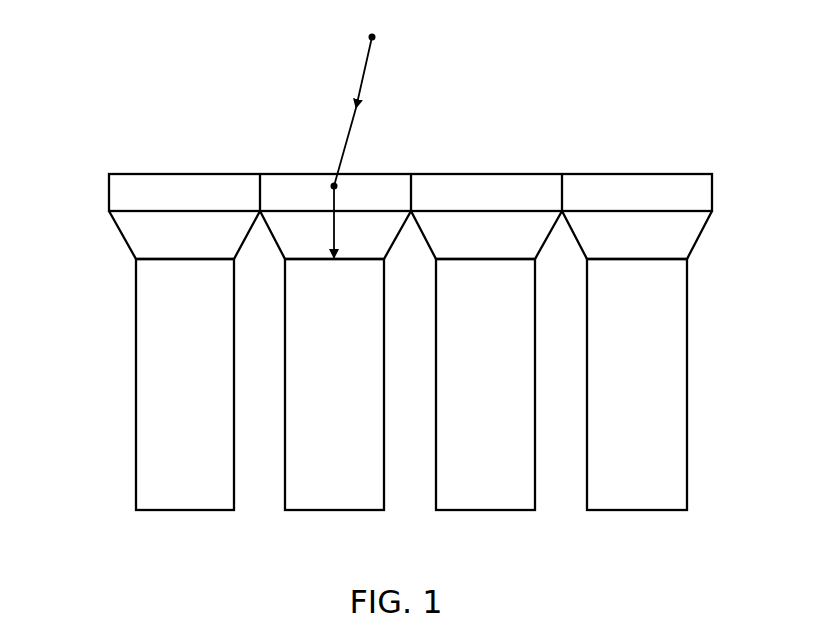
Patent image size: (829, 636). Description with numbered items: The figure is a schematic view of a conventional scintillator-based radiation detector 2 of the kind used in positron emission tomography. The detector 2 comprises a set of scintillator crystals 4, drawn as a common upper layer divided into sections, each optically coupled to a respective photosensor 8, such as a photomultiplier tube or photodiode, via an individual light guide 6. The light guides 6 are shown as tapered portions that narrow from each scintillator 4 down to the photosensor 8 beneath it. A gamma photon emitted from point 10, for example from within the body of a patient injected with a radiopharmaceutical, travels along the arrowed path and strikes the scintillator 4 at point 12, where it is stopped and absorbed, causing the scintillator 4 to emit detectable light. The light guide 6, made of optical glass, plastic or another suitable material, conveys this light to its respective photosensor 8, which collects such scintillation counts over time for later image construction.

The detector 2 is at (191, 47).
The scintillator crystal 4 is at (596, 184).
The light guide 6 is at (142, 232).
The photosensor 8 is at (297, 493).
The point of gamma photon emission 10 is at (375, 37).
The point of absorption 12 is at (337, 186).